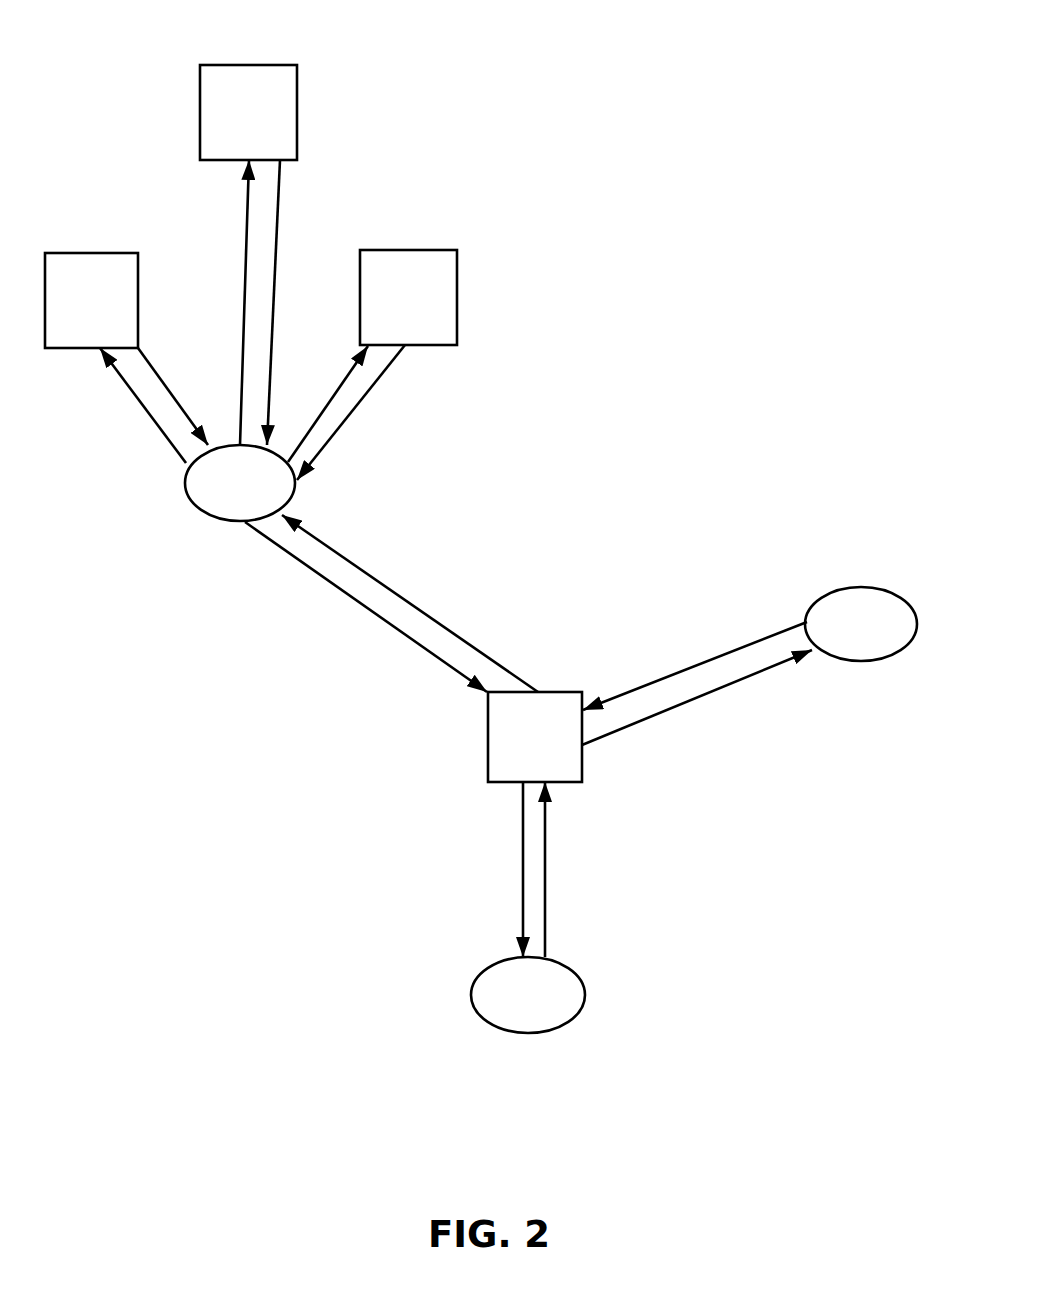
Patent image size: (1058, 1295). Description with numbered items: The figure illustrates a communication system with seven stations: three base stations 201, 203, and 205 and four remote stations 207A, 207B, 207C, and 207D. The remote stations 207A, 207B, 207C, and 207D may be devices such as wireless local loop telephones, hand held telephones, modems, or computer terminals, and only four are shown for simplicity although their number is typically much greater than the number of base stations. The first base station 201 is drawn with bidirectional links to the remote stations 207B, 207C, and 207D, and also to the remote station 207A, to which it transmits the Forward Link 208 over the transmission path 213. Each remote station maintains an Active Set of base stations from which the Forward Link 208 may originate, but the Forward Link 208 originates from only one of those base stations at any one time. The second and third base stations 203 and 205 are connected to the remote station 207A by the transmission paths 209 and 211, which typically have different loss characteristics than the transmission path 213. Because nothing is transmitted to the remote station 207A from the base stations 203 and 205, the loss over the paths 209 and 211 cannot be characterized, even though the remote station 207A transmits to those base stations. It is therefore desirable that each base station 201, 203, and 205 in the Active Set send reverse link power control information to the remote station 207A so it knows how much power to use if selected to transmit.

The base station 201 is at (207, 519).
The base station 203 is at (880, 587).
The base station 205 is at (495, 1025).
The remote station 207A is at (540, 692).
The remote station 207B is at (98, 253).
The remote station 207C is at (258, 65).
The remote station 207D is at (408, 250).
The Forward Link 208 is at (313, 578).
The transmission path 209 is at (742, 648).
The transmission path 211 is at (546, 872).
The transmission path 213 is at (350, 565).